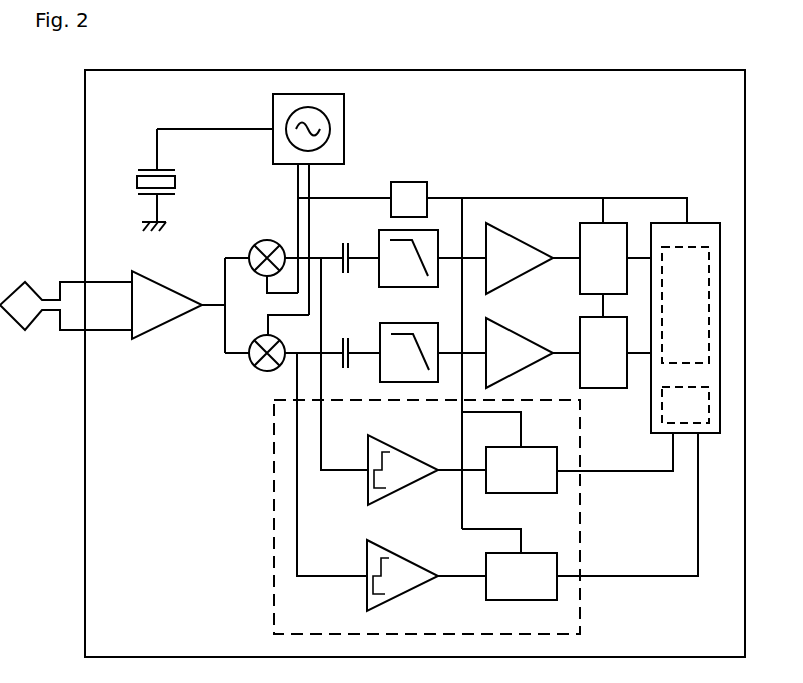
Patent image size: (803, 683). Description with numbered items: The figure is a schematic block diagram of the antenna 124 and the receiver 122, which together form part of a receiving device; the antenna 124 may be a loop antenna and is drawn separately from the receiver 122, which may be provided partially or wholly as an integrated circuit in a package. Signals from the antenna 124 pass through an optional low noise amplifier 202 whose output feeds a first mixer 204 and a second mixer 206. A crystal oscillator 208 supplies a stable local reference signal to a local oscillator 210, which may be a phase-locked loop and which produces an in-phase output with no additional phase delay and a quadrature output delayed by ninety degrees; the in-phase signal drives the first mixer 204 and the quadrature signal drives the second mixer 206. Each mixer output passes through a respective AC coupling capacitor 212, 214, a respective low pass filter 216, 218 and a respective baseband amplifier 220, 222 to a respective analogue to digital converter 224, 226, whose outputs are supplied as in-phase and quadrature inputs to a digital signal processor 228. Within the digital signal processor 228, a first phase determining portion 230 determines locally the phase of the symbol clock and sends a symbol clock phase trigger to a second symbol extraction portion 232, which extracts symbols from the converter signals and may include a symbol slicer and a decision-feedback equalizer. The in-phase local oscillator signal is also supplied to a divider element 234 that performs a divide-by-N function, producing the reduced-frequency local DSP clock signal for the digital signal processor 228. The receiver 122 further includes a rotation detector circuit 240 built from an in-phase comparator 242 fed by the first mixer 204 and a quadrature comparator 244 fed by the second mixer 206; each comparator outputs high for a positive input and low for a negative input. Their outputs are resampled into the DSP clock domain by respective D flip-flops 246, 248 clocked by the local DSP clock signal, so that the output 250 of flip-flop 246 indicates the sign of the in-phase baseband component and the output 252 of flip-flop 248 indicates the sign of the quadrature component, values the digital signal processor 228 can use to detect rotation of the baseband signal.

The receiver 122 is at (85, 135).
The antenna 124 is at (15, 325).
The low noise amplifier 202 is at (168, 333).
The first mixer 204 is at (252, 243).
The second mixer 206 is at (250, 342).
The crystal oscillator 208 is at (137, 180).
The local oscillator 210 is at (344, 128).
The AC coupling capacitor 212 is at (352, 268).
The AC coupling capacitor 214 is at (352, 362).
The low pass filter 216 is at (392, 231).
The low pass filter 218 is at (392, 323).
The baseband amplifier 220 is at (533, 258).
The baseband amplifier 222 is at (533, 353).
The analogue to digital converter 224 is at (615, 270).
The analogue to digital converter 226 is at (615, 352).
The digital signal processor 228 is at (709, 223).
The first phase determining portion 230 is at (685, 405).
The second symbol extraction portion 232 is at (685, 305).
The divider element 234 is at (407, 182).
The rotation detector circuit 240 is at (273, 497).
The in-phase comparator 242 is at (418, 456).
The quadrature comparator 244 is at (425, 562).
The D flip-flop 246 is at (495, 494).
The D flip-flop 248 is at (520, 600).
The output 250 is at (673, 478).
The output 252 is at (673, 580).